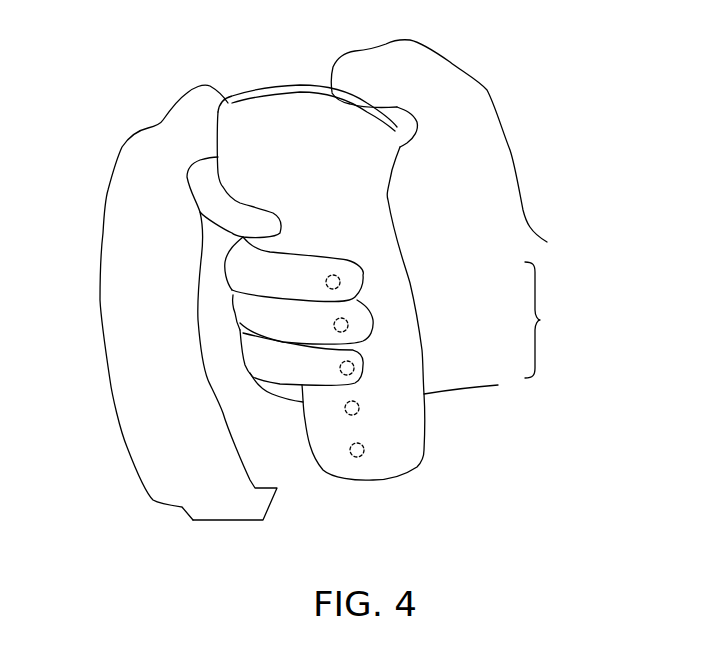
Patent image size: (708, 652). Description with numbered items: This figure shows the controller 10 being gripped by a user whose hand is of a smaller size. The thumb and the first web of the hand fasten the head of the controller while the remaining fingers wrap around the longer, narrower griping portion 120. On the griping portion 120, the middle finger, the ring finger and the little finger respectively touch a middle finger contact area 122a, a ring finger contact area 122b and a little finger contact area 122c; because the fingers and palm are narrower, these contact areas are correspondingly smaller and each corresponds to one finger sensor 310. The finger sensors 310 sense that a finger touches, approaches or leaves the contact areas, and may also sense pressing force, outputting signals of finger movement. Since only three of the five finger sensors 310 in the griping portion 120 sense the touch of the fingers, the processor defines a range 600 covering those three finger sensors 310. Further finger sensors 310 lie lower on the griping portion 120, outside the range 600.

The controller 10 is at (147, 90).
The griping portion 120 is at (408, 433).
The middle finger contact area 122a is at (440, 262).
The ring finger contact area 122b is at (440, 303).
The little finger contact area 122c is at (440, 348).
The range 600 is at (556, 320).
The finger sensors 310 is at (362, 411).